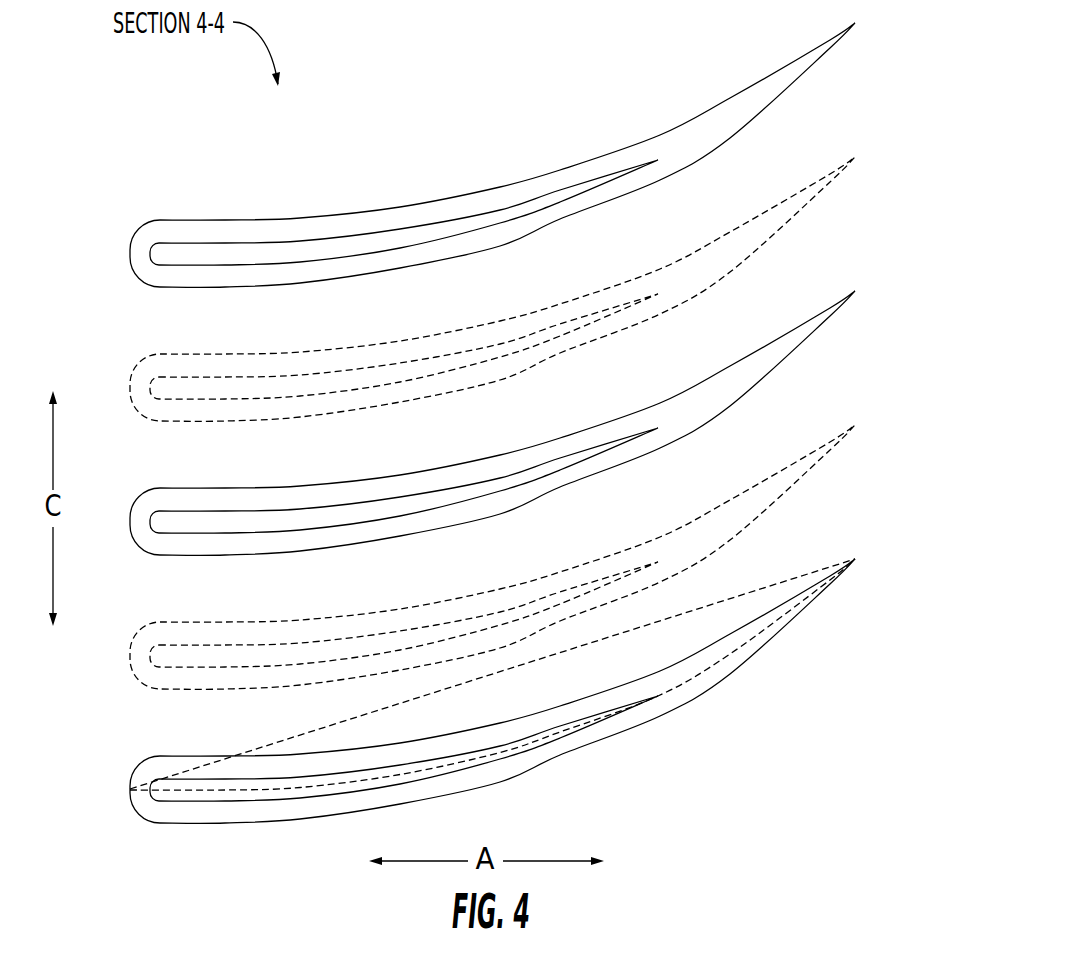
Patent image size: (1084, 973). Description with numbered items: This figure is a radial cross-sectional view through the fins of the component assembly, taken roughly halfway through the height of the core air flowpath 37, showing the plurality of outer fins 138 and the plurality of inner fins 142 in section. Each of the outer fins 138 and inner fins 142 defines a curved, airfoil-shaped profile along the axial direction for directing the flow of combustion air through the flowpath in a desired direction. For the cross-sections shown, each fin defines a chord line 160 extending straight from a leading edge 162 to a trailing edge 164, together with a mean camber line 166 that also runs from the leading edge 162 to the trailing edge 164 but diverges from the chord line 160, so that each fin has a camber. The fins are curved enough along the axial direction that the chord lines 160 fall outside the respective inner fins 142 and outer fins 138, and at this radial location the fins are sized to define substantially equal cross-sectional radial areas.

The core air flowpath 37 is at (432, 309).
The outer fins 138 is at (574, 299).
The inner fins 142 is at (508, 186).
The chord line 160 is at (700, 605).
The leading edge 162 is at (128, 803).
The trailing edge 164 is at (857, 550).
The mean camber line 166 is at (588, 748).